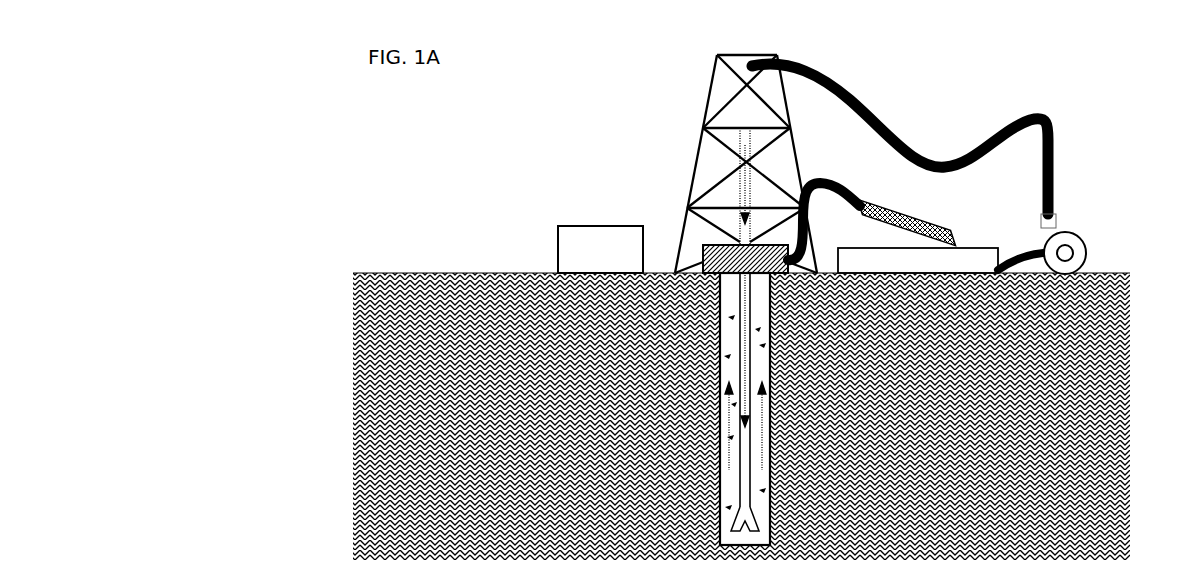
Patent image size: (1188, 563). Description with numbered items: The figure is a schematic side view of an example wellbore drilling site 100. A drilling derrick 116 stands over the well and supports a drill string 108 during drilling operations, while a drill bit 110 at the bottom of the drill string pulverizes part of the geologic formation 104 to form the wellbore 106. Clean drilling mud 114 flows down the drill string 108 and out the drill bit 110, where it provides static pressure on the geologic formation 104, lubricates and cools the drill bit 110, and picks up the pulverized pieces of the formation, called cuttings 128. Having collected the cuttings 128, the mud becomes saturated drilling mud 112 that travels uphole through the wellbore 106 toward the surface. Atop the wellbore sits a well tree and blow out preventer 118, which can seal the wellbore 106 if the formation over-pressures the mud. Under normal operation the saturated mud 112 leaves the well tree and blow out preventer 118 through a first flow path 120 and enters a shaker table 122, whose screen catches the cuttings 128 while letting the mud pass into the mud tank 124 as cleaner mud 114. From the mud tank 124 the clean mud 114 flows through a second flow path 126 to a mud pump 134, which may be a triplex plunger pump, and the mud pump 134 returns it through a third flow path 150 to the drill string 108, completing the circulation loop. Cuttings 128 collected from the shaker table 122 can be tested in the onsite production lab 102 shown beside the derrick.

The wellbore drilling site 100 is at (514, 170).
The onsite production lab 102 is at (558, 251).
The geologic formation 104 is at (511, 427).
The wellbore 106 is at (720, 343).
The drill string 108 is at (740, 485).
The drill bit 110 is at (750, 513).
The saturated drilling mud 112 is at (762, 446).
The clean drilling mud 114 is at (746, 371).
The drilling derrick 116 is at (703, 100).
The well tree and blow out preventer 118 is at (704, 246).
The first flow path 120 is at (829, 180).
The shaker table 122 is at (905, 212).
The mud tank 124 is at (971, 247).
The second flow path 126 is at (1020, 256).
The cuttings 128 is at (730, 437).
The mud pump 134 is at (1090, 253).
The third flow path 150 is at (934, 160).